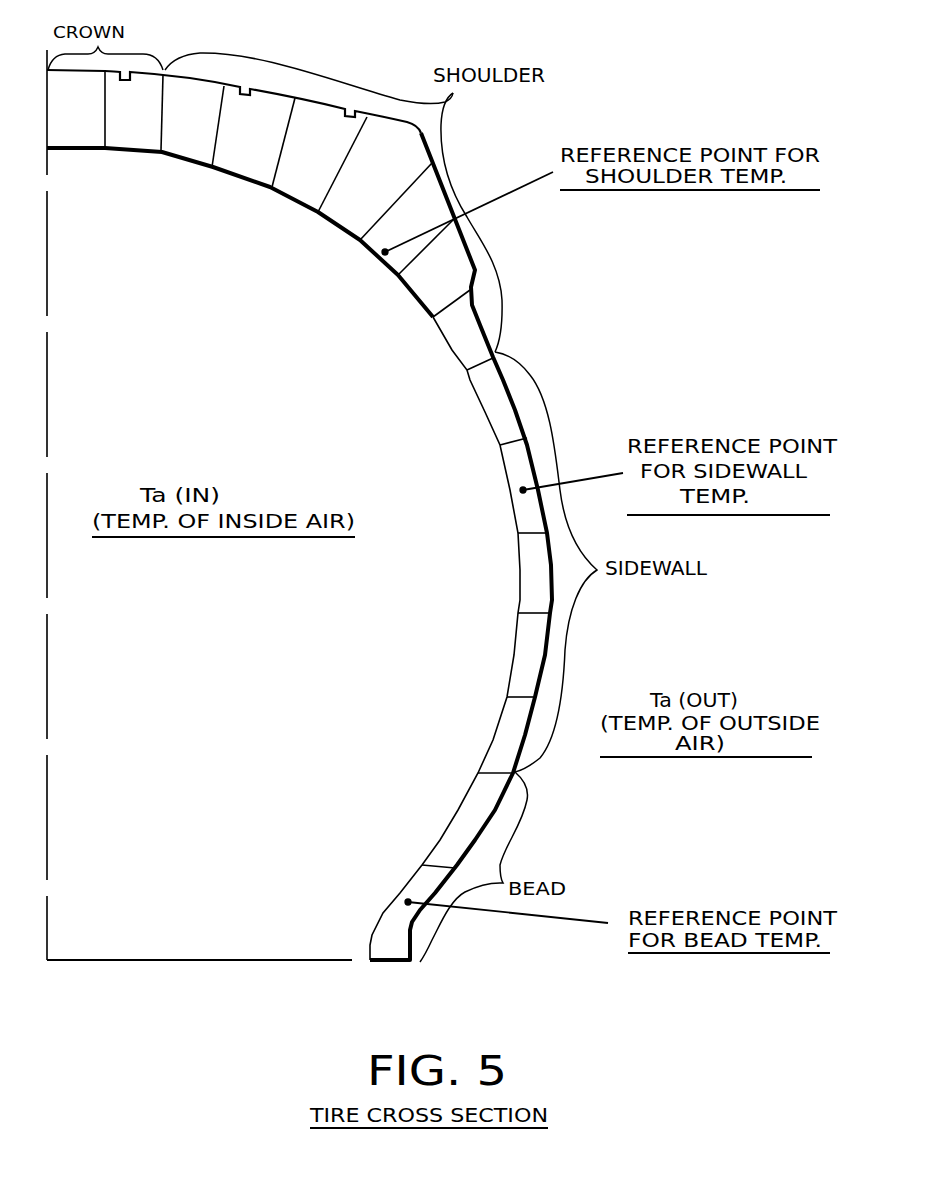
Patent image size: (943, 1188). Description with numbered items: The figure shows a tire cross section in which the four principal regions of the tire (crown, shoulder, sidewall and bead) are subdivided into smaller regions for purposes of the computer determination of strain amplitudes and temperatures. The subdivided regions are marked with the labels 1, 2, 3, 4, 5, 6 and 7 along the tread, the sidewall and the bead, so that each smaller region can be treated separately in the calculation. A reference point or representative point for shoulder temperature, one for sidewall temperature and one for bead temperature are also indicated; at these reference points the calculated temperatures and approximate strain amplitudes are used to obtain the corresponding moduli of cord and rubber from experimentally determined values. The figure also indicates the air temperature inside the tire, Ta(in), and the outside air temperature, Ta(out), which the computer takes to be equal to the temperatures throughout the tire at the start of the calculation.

The tire section segment 1 (tread, sidewall and bead temperature zones) 1 is at (300, 490).
The tire section segment 2 (tread, sidewall and bead temperature zones) 2 is at (336, 456).
The tire section segment 3 (tread and sidewall temperature zones) 3 is at (409, 341).
The tire section segment 4 (tread and sidewall temperature zones) 4 is at (422, 309).
The tire section segment 5 (tread and sidewall temperature zones) 5 is at (425, 293).
The tread section segment 6 is at (425, 267).
The tread section segment 7 is at (450, 325).